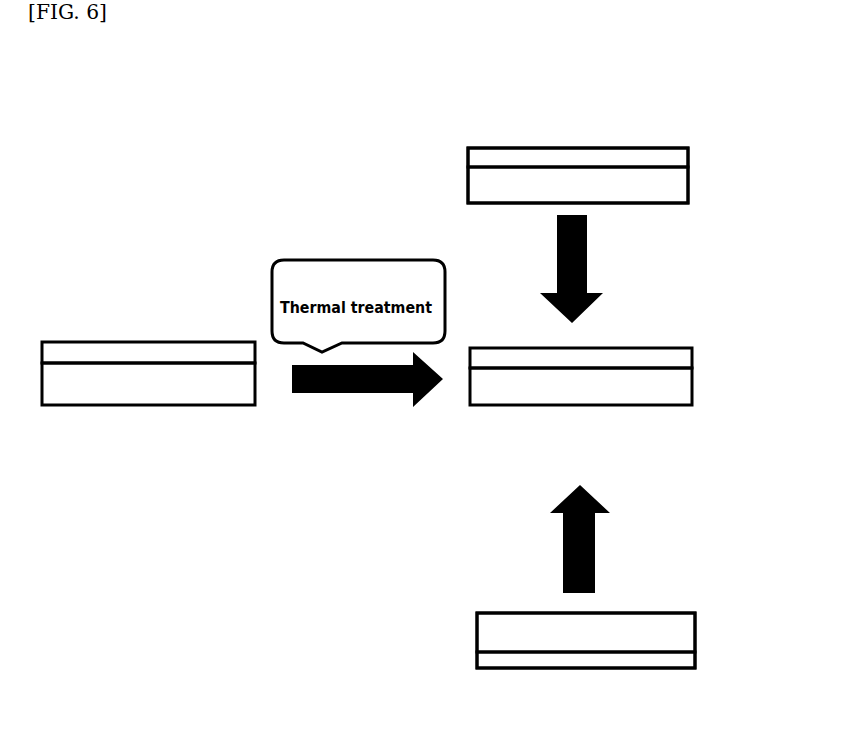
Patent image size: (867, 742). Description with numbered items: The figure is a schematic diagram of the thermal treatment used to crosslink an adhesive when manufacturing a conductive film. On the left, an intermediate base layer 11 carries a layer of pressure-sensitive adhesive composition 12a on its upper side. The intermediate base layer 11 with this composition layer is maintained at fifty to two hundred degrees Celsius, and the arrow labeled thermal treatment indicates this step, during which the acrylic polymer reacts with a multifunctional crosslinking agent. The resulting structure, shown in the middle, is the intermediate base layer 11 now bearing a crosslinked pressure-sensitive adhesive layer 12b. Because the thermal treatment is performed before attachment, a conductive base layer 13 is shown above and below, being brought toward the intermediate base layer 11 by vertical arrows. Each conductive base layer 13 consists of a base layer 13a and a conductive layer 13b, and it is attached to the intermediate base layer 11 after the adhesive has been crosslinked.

The intermediate base layer 11 is at (178, 400).
The layer of pressure-sensitive adhesive composition 12a is at (167, 340).
The pressure-sensitive adhesive layer 12b is at (552, 348).
The conductive base layer 13 is at (698, 150).
The base layer 13a is at (640, 203).
The conductive layer 13b is at (545, 147).